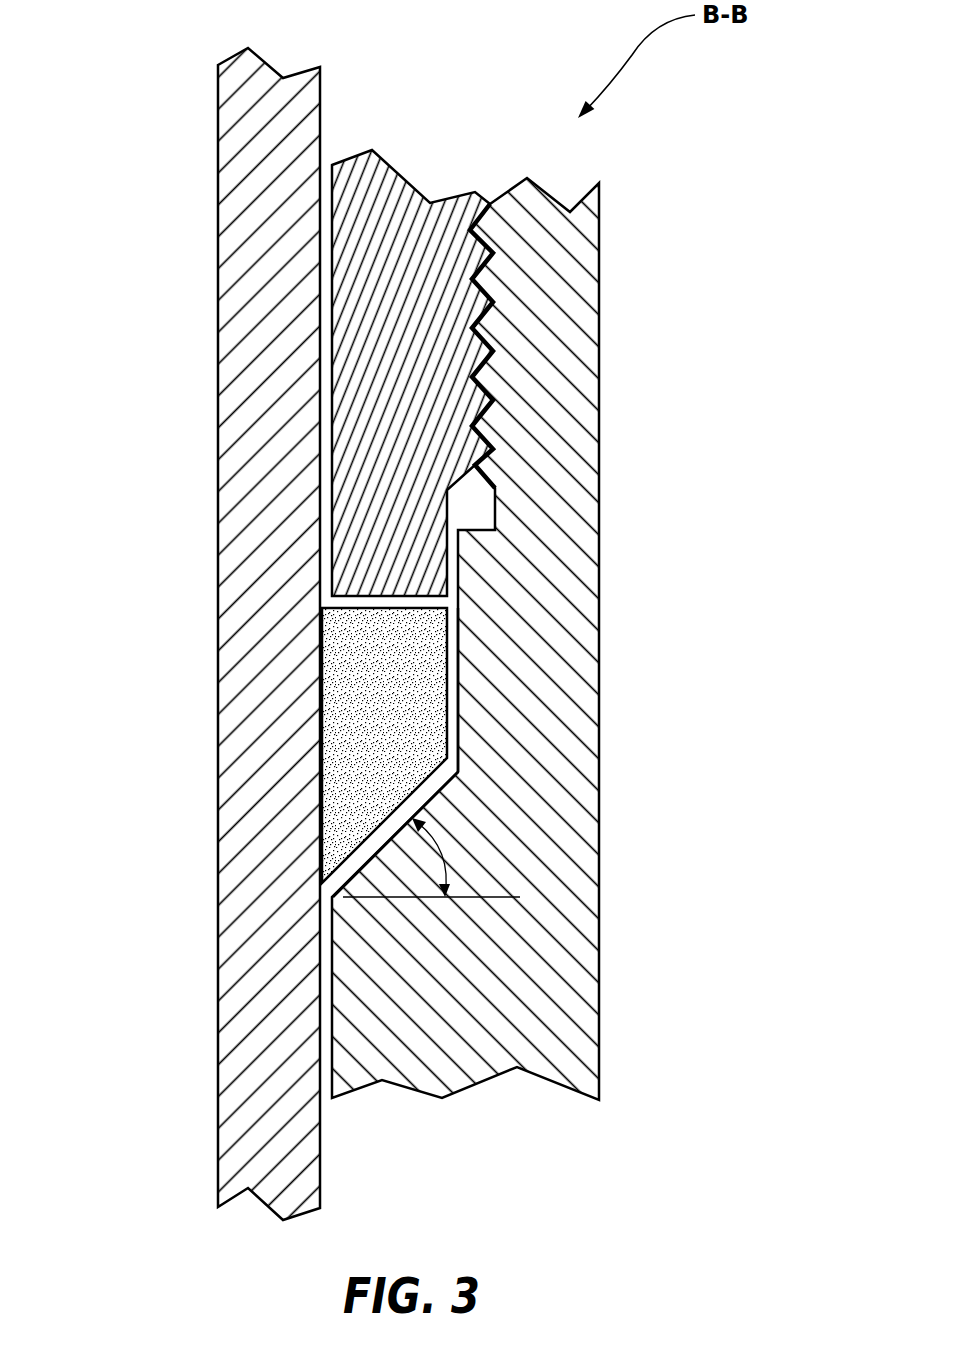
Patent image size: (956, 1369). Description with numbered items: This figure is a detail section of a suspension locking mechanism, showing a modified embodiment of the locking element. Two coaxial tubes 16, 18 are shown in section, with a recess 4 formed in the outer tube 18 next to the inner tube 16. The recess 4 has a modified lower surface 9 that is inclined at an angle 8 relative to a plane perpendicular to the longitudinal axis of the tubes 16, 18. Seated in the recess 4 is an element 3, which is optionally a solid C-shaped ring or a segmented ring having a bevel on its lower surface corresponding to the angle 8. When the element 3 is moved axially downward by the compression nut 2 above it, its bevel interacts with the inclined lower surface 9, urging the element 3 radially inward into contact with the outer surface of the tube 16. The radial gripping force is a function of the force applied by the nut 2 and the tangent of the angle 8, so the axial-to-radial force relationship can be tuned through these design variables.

The compression nut 2 is at (417, 408).
The element 3 is at (358, 710).
The recess 4 is at (457, 693).
The angle 8 is at (440, 853).
The lower surface 9 is at (382, 838).
The tube 16 is at (235, 1020).
The tube 18 is at (555, 965).